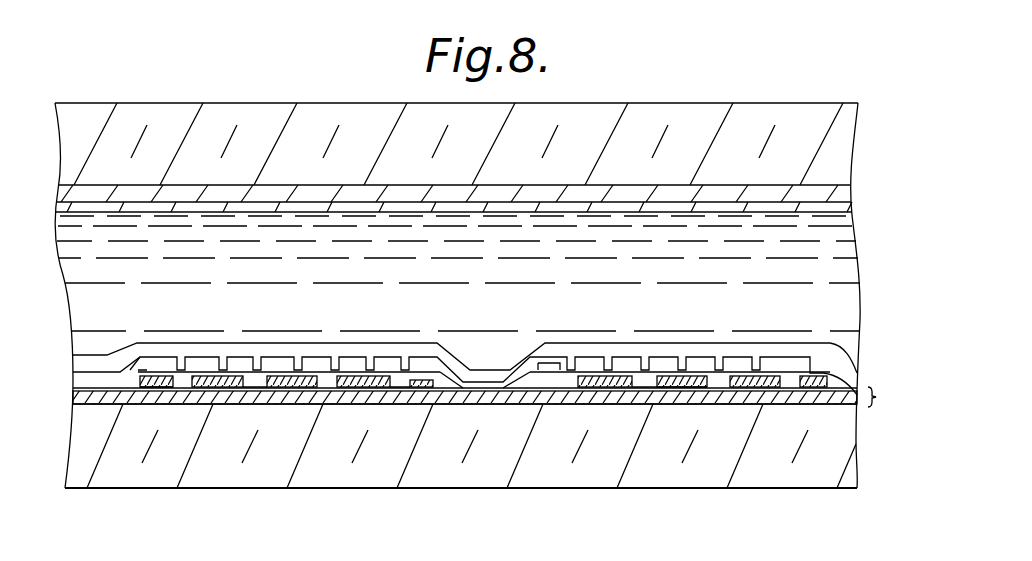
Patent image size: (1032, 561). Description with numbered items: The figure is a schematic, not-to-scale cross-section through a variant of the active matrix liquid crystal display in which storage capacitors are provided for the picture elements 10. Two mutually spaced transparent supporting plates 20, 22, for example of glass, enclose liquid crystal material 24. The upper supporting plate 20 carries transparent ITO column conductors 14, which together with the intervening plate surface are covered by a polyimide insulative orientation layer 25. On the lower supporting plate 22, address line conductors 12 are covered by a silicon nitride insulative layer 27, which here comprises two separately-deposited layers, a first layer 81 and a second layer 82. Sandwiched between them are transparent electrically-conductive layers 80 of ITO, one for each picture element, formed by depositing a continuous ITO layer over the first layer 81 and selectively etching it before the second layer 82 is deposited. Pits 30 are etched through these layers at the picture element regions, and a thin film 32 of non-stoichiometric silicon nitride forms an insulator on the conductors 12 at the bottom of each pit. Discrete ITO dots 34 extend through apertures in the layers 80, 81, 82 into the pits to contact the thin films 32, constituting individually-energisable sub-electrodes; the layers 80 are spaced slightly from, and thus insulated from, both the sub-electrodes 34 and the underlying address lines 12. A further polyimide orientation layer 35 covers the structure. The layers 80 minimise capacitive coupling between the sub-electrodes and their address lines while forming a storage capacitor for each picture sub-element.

The picture element 10 is at (176, 338).
The conductors 12 is at (288, 405).
The column conductors 14 is at (705, 197).
The upper supporting plate 20 is at (787, 112).
The supporting plate 22 is at (712, 477).
The liquid crystal material 24 is at (848, 243).
The insulative orientation layer 25 is at (848, 205).
The insulative layer 27 is at (888, 399).
The pits 30 is at (175, 388).
The thin film of insulator 32 is at (260, 392).
The dots 34 is at (183, 368).
The orientation layer 35 is at (107, 356).
The electrically-conductive layer 80 is at (143, 374).
The first layer 81 is at (105, 403).
The second layer 82 is at (127, 383).